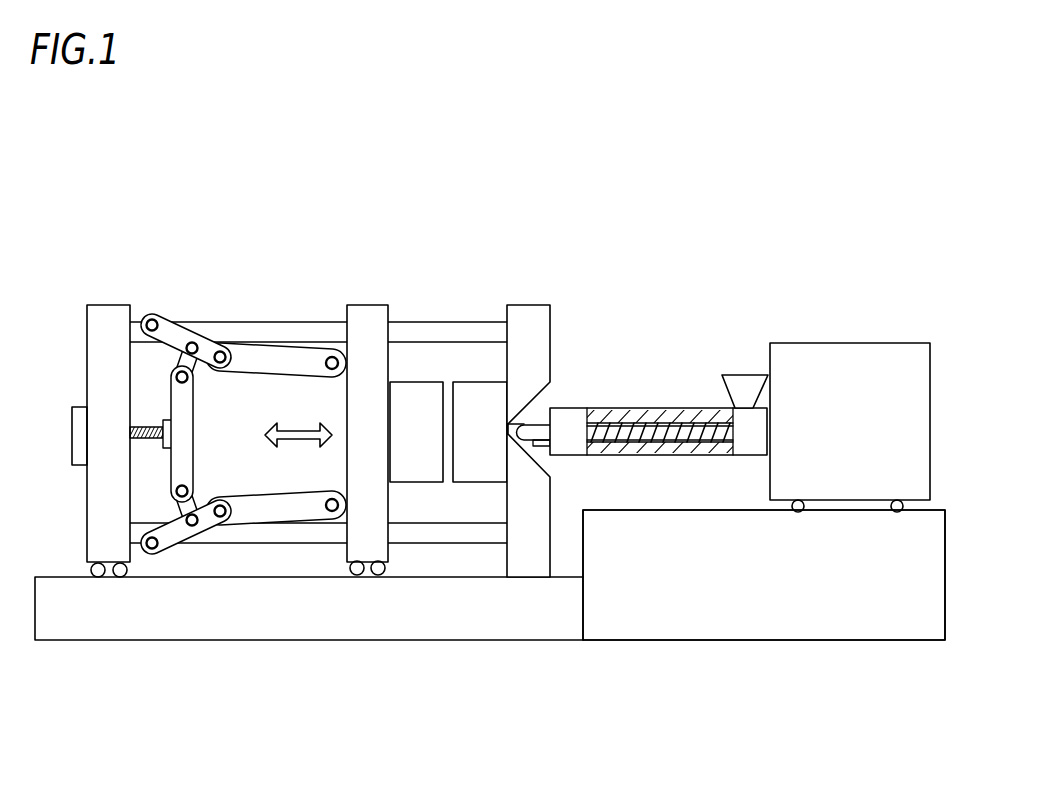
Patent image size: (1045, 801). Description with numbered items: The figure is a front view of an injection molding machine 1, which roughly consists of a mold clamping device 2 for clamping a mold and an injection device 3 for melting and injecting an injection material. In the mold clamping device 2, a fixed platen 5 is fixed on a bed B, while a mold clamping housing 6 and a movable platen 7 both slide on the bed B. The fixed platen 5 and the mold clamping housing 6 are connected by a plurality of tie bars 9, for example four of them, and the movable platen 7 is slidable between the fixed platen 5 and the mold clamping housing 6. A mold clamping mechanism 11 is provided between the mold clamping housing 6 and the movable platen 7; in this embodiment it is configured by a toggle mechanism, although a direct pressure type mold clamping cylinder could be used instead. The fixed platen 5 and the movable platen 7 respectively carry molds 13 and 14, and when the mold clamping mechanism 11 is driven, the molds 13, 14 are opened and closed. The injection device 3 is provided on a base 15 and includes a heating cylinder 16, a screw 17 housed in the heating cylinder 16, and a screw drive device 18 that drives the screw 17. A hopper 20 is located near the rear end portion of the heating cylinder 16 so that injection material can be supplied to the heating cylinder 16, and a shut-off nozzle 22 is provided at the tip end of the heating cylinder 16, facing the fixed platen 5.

The injection molding machine 1 is at (886, 186).
The mold clamping device 2 is at (526, 234).
The injection device 3 is at (886, 278).
The fixed platen 5 is at (536, 303).
The mold clamping housing 6 is at (113, 305).
The movable platen 7 is at (368, 303).
The tie bar 9 is at (263, 322).
The mold clamping mechanism 11 is at (243, 355).
The mold 13 is at (473, 382).
The mold 14 is at (413, 382).
The base 15 is at (728, 602).
The heating cylinder 16 is at (607, 408).
The screw 17 is at (655, 420).
The screw drive device 18 is at (812, 343).
The hopper 20 is at (732, 375).
The shut-off nozzle 22 is at (528, 423).
The bed B is at (527, 627).